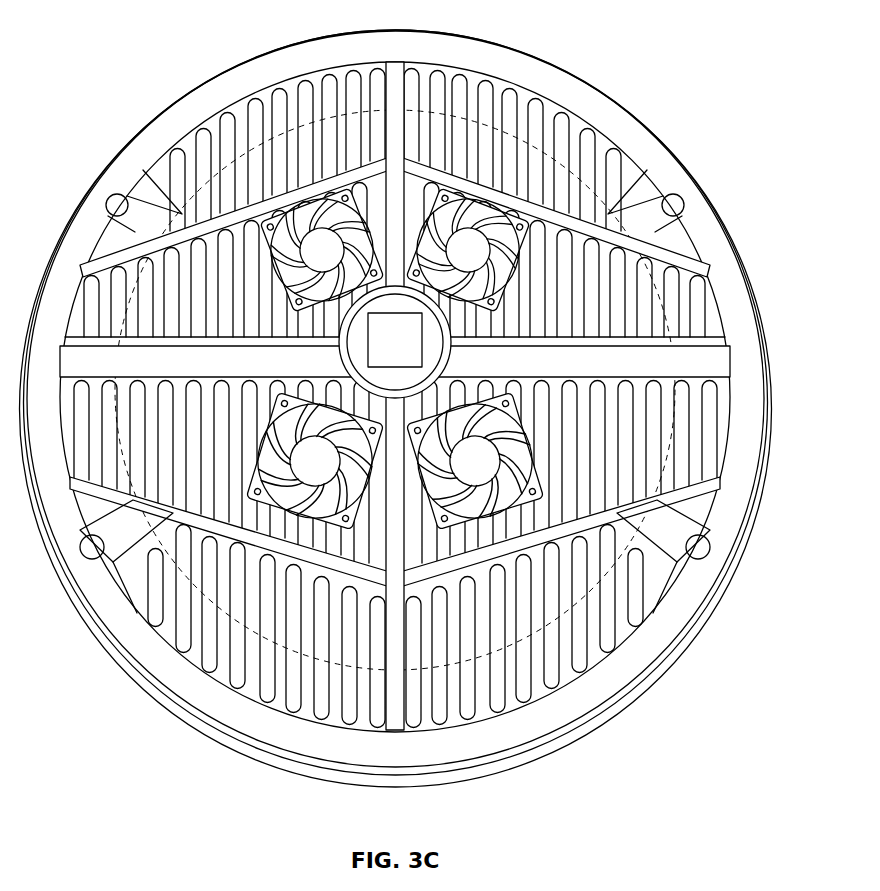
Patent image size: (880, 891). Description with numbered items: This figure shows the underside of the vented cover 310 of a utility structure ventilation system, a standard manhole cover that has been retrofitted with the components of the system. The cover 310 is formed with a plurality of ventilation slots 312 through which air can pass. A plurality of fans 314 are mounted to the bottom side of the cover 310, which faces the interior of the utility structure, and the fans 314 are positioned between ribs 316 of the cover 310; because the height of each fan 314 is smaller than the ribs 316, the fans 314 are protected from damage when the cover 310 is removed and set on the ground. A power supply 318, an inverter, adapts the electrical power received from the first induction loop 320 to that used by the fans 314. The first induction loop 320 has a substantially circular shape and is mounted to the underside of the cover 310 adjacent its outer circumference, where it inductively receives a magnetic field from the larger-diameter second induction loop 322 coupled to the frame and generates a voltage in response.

The vented cover 310 is at (447, 32).
The ventilation slots 312 is at (277, 100).
The fans 314 is at (270, 213).
The ribs 316 is at (733, 342).
The power supply 318 is at (398, 308).
The first induction loop 320 is at (520, 637).
The second induction loop 322 is at (395, 391).